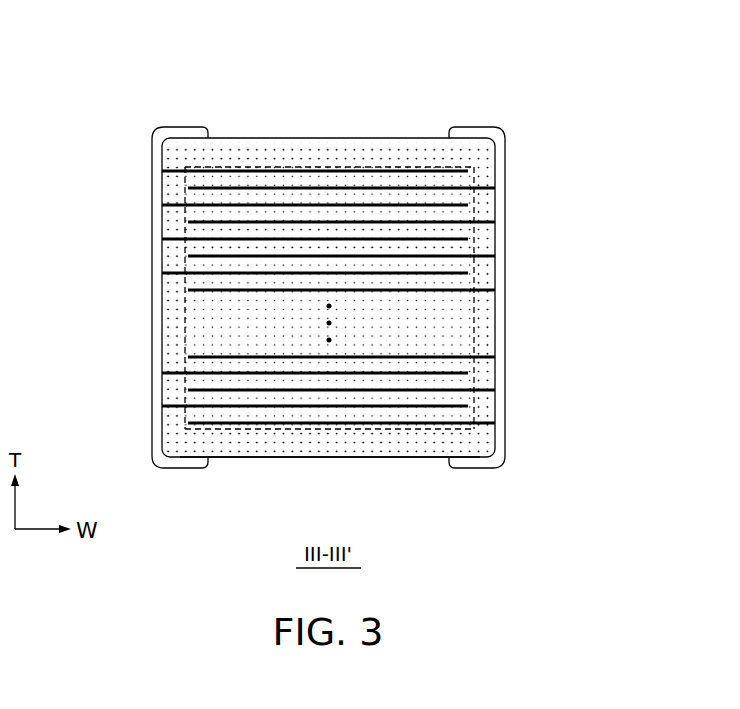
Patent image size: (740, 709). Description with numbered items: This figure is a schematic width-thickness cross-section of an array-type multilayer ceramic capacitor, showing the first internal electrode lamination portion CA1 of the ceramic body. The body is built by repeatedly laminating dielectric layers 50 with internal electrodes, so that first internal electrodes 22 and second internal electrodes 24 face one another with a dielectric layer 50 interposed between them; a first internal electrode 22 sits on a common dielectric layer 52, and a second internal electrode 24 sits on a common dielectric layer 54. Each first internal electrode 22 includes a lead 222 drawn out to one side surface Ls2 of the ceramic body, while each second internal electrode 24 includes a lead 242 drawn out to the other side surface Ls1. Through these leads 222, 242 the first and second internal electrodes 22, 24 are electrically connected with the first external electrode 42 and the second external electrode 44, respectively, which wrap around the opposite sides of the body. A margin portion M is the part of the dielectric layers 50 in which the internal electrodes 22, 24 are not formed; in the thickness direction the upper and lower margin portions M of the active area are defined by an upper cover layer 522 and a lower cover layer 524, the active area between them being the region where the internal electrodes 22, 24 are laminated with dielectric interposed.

The first internal electrode lamination portion CA1 is at (557, 39).
The dielectric layers 50 is at (577, 213).
The common dielectric layer 52 is at (458, 233).
The common dielectric layer 54 is at (460, 247).
The first internal electrode 22 is at (240, 168).
The lead 222 is at (176, 167).
The second internal electrode 24 is at (403, 170).
The lead 242 is at (475, 190).
The first external electrode 42 is at (157, 178).
The second external electrode 44 is at (502, 180).
The upper cover layer 522 is at (332, 148).
The lower cover layer 524 is at (400, 447).
The side surface Ls1 is at (165, 300).
The side surface Ls2 is at (490, 338).
The margin portion M is at (266, 452).